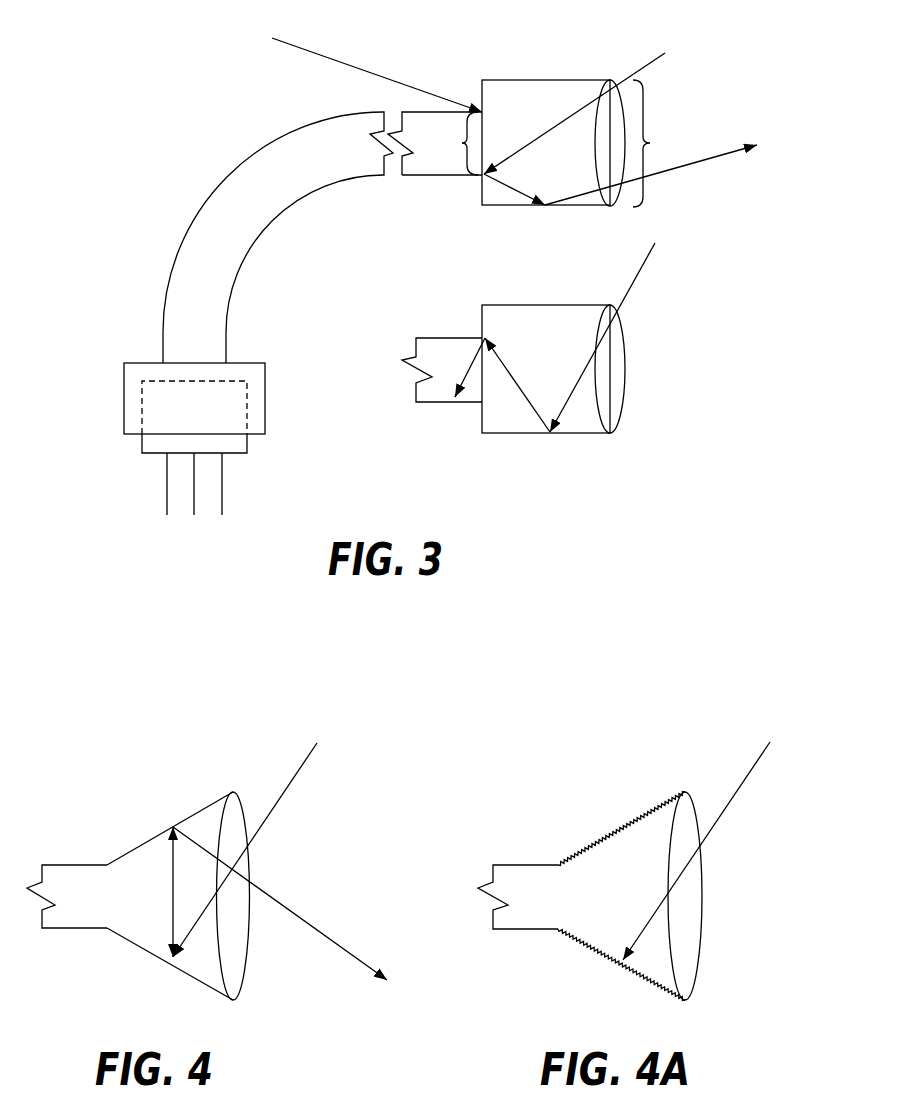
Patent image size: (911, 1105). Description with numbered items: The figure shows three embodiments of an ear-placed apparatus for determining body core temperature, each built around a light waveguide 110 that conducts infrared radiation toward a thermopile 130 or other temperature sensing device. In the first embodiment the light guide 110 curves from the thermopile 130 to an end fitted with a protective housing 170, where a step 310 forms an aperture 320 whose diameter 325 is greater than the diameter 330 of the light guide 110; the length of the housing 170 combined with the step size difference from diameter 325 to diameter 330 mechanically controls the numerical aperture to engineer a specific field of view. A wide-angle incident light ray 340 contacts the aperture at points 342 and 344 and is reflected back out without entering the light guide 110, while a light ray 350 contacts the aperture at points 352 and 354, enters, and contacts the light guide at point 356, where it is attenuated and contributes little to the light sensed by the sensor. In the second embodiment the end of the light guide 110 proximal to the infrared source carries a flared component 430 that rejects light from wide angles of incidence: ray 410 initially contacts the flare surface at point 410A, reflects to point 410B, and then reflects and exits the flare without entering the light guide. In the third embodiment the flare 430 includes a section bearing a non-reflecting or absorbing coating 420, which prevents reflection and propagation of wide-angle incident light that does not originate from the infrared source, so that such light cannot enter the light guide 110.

In FIG. 3, the light waveguide 110 is at (228, 177).
In FIG. 4A, the light waveguide 110 is at (525, 865).
In FIG. 3, the thermopile 130 is at (148, 442).
In FIG. 3, the protective housing 170 is at (545, 80).
In FIG. 3, the step 310 is at (380, 74).
In FIG. 3, the aperture 320 is at (626, 112).
In FIG. 3, the aperture diameter 325 is at (661, 143).
In FIG. 3, the light guide diameter 330 is at (451, 143).
In FIG. 3, the wide-angle incident light ray 340 is at (641, 66).
In FIG. 3, the aperture contact point 342 is at (481, 178).
In FIG. 3, the aperture contact point 344 is at (550, 208).
In FIG. 3, the light ray 350 is at (625, 288).
In FIG. 3, the aperture contact point 352 is at (548, 438).
In FIG. 3, the aperture contact point 354 is at (482, 337).
In FIG. 3, the light guide contact point 356 is at (452, 402).
In FIG. 4, the ray 410 is at (280, 802).
In FIG. 4A, the ray 410 is at (730, 802).
In FIG. 4, the first flare contact point 410A is at (170, 965).
In FIG. 4, the second flare contact point 410B is at (170, 828).
In FIG. 4A, the non-reflecting or absorbing coating 420 is at (610, 962).
In FIG. 4, the flared component 430 is at (207, 820).
In FIG. 4A, the flared component 430 is at (645, 832).